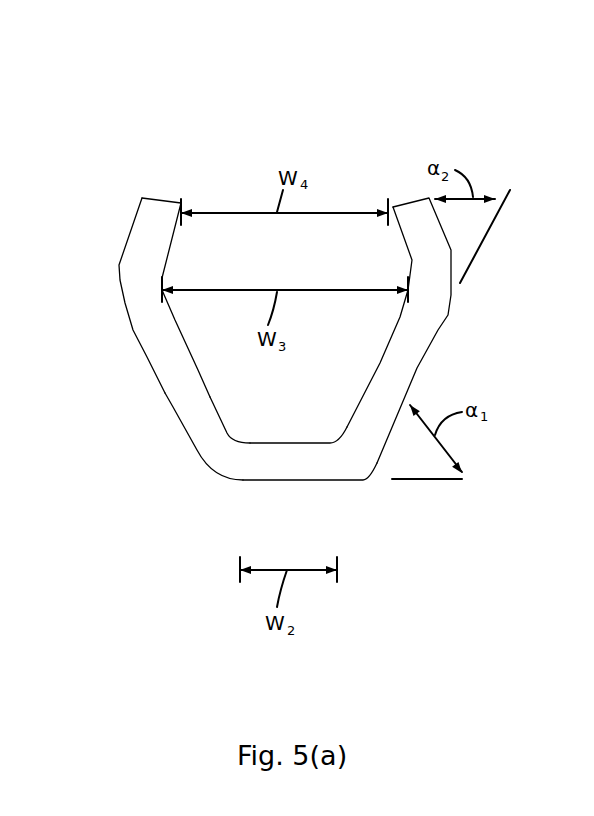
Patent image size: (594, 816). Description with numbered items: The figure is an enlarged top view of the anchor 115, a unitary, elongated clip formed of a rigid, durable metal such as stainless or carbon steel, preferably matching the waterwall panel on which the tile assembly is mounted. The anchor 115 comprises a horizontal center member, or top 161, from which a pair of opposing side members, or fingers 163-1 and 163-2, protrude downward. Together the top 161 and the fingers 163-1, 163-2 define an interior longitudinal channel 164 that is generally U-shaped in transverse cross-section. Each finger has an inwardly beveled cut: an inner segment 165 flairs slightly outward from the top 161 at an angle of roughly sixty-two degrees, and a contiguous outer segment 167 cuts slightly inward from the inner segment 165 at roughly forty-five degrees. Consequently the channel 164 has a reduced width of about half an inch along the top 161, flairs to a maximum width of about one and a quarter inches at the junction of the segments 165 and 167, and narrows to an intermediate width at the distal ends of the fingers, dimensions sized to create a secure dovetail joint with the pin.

The anchor 115 is at (418, 120).
The top 161 is at (267, 487).
The first finger 163-1 is at (133, 332).
The second finger 163-2 is at (438, 330).
The interior longitudinal channel 164 is at (324, 415).
The inner segment 165 is at (173, 407).
The outer segment 167 is at (128, 248).